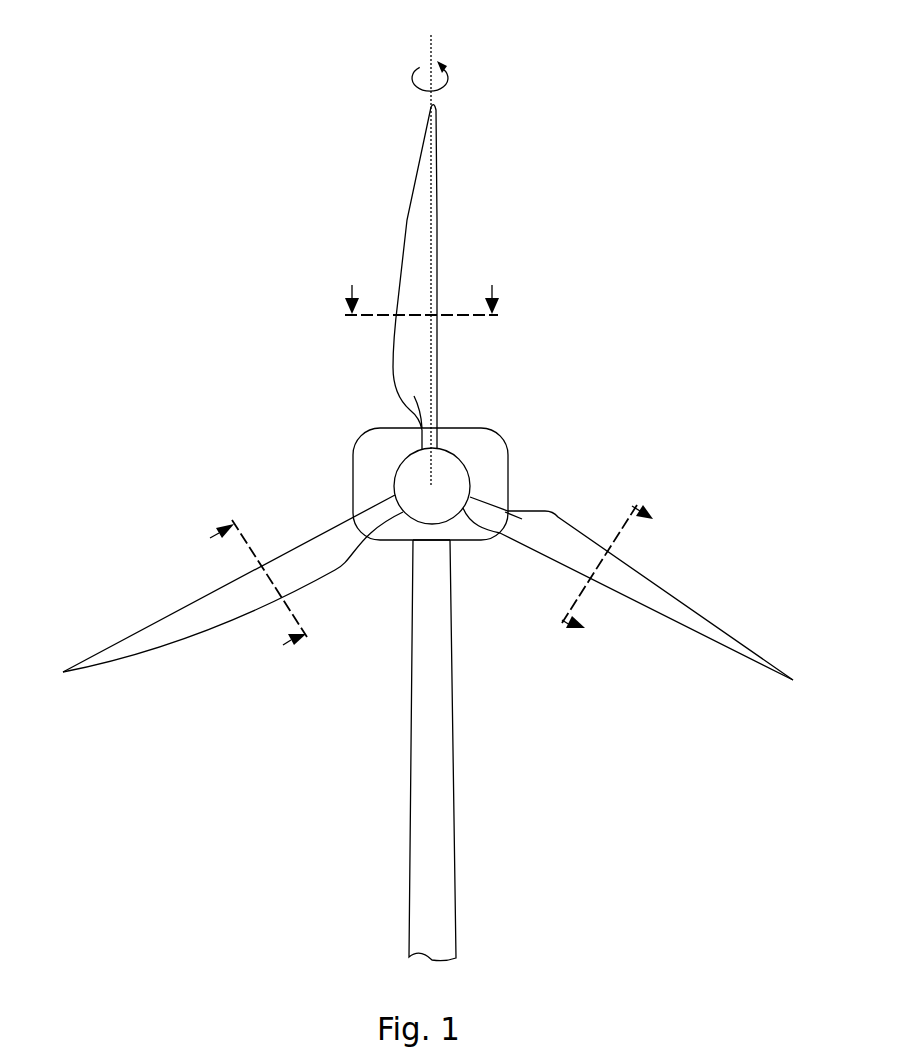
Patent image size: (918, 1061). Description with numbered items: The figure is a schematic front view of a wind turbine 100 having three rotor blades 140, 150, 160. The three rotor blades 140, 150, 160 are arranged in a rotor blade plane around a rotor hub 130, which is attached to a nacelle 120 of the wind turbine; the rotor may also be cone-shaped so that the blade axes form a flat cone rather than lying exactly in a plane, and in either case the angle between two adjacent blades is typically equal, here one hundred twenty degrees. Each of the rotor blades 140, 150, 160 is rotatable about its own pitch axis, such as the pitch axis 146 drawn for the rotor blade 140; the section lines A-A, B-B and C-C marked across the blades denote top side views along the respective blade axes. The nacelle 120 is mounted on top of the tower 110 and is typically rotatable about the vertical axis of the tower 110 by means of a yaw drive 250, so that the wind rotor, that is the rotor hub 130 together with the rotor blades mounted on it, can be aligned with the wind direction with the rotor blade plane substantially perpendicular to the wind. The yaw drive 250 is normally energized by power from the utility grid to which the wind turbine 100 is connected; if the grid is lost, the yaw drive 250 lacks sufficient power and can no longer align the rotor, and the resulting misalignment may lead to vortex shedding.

The wind turbine 100 is at (780, 62).
The tower 110 is at (423, 826).
The nacelle 120 is at (488, 455).
The rotor hub 130 is at (422, 484).
The rotor blade 140 is at (423, 205).
The pitch axis 146 is at (426, 50).
The rotor blade 150 is at (710, 643).
The rotor blade 160 is at (127, 652).
The yaw drive 250 is at (435, 547).